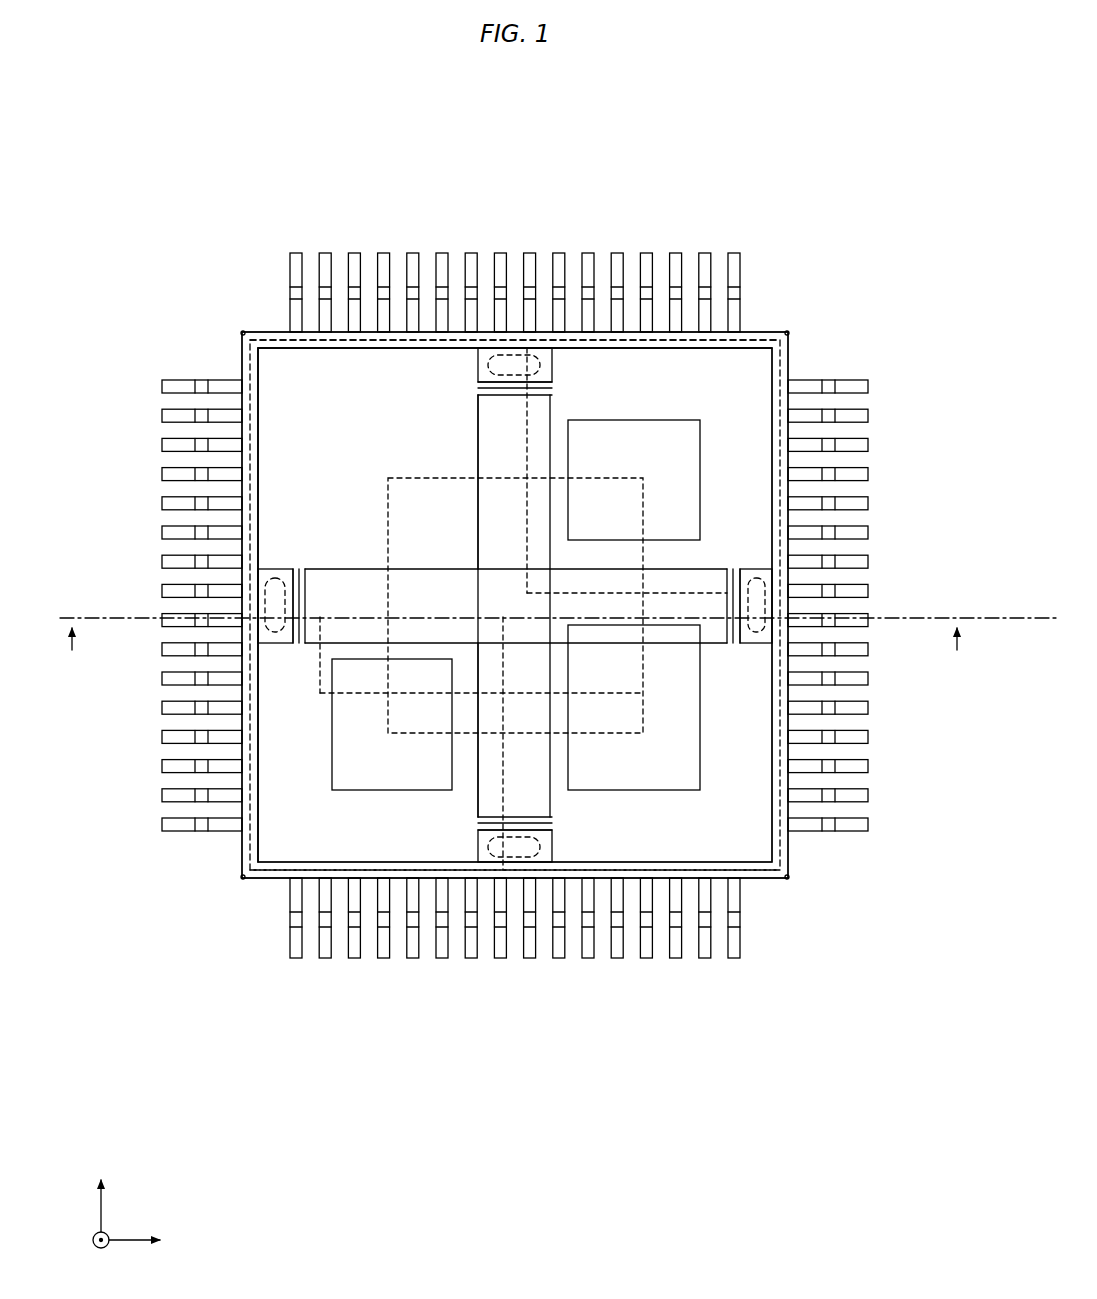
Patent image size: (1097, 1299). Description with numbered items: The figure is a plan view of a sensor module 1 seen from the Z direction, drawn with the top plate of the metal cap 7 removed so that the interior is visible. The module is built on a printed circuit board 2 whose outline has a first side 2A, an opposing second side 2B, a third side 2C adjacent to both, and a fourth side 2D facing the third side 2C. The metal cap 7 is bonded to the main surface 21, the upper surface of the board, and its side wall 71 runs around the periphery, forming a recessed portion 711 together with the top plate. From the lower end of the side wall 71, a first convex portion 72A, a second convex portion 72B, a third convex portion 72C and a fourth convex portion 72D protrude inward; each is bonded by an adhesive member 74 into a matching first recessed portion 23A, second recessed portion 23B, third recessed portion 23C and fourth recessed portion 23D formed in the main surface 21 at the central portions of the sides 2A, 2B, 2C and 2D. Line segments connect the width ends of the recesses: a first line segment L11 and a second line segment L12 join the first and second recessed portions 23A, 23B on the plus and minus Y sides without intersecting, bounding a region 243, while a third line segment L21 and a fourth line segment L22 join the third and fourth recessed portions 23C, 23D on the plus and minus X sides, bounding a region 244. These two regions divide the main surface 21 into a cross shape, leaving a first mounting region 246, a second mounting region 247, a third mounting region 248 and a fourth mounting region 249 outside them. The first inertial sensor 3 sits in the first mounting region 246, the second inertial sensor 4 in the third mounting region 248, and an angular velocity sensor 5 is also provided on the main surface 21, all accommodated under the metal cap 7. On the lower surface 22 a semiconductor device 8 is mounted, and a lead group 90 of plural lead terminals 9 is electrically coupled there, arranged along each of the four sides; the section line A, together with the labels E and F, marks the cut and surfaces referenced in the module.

The sensor module 1 is at (866, 117).
The printed circuit board 2 is at (275, 851).
The first side 2A is at (790, 378).
The second side 2B is at (243, 380).
The third side 2C is at (274, 372).
The fourth side 2D is at (752, 850).
The first inertial sensor 3 is at (706, 434).
The second inertial sensor 4 is at (336, 797).
The angular velocity sensor 5 is at (697, 797).
The metal cap 7 is at (259, 357).
The semiconductor device 8 is at (641, 722).
The lead terminal 9 is at (742, 268).
The main surface 21 is at (292, 358).
The lower surface 22 is at (760, 865).
The first recessed portion 23A is at (753, 572).
The second recessed portion 23B is at (276, 572).
The third recessed portion 23C is at (553, 365).
The fourth recessed portion 23D is at (553, 848).
The side wall 71 is at (760, 345).
The first convex portion 72A is at (735, 646).
The second convex portion 72B is at (300, 646).
The third convex portion 72C is at (478, 388).
The fourth convex portion 72D is at (478, 823).
The adhesive member 74 is at (480, 365).
The lead group 90 is at (745, 968).
The region surrounded by line segment L1 243 is at (426, 636).
The region surrounded by line segment L2 244 is at (478, 522).
The first mounting region 246 is at (776, 346).
The second mounting region 247 is at (243, 345).
The third mounting region 248 is at (268, 823).
The fourth mounting region 249 is at (763, 828).
The recessed portion 711 is at (327, 372).
The first surface E is at (750, 338).
The second surface F is at (284, 868).
The section line A- A is at (560, 648).
The first line segment L11 is at (345, 565).
The second line segment L12 is at (365, 636).
The third line segment L21 is at (553, 413).
The fourth line segment L22 is at (478, 444).